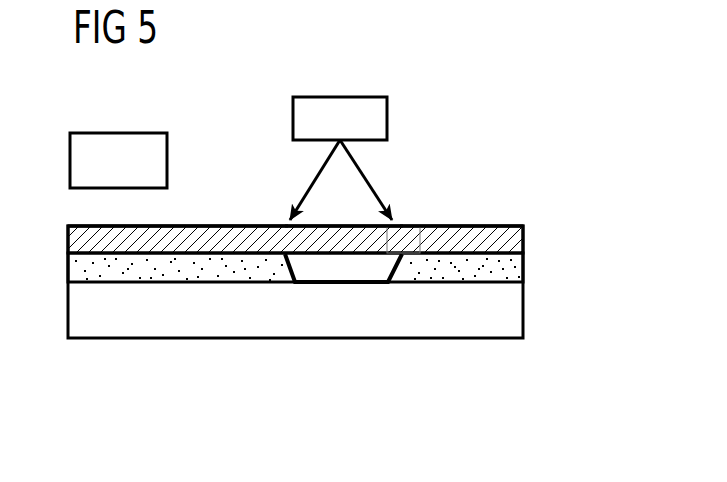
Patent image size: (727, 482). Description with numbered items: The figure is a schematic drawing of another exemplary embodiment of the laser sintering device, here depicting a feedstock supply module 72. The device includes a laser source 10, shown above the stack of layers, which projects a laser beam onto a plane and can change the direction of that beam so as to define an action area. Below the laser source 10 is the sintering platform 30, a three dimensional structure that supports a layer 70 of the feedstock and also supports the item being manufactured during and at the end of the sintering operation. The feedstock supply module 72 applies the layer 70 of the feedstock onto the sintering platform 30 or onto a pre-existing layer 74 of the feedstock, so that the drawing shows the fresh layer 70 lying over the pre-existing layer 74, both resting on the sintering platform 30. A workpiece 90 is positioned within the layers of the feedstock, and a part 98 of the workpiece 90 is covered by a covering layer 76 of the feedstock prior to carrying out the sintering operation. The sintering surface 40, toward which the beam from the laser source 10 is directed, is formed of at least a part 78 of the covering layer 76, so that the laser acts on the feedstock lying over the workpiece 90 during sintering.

The laser source 10 is at (355, 131).
The sintering platform 30 is at (528, 311).
The sintering surface 40 is at (203, 221).
The layer of the feedstock 70 is at (68, 241).
The feedstock supply module 72 is at (134, 175).
The pre-existing layer of the feedstock 74 is at (68, 271).
The covering layer of the feedstock 76 is at (276, 222).
The part of the covering layer 78 is at (402, 223).
The workpiece 90 is at (375, 288).
The part of the workpiece 98 is at (405, 255).